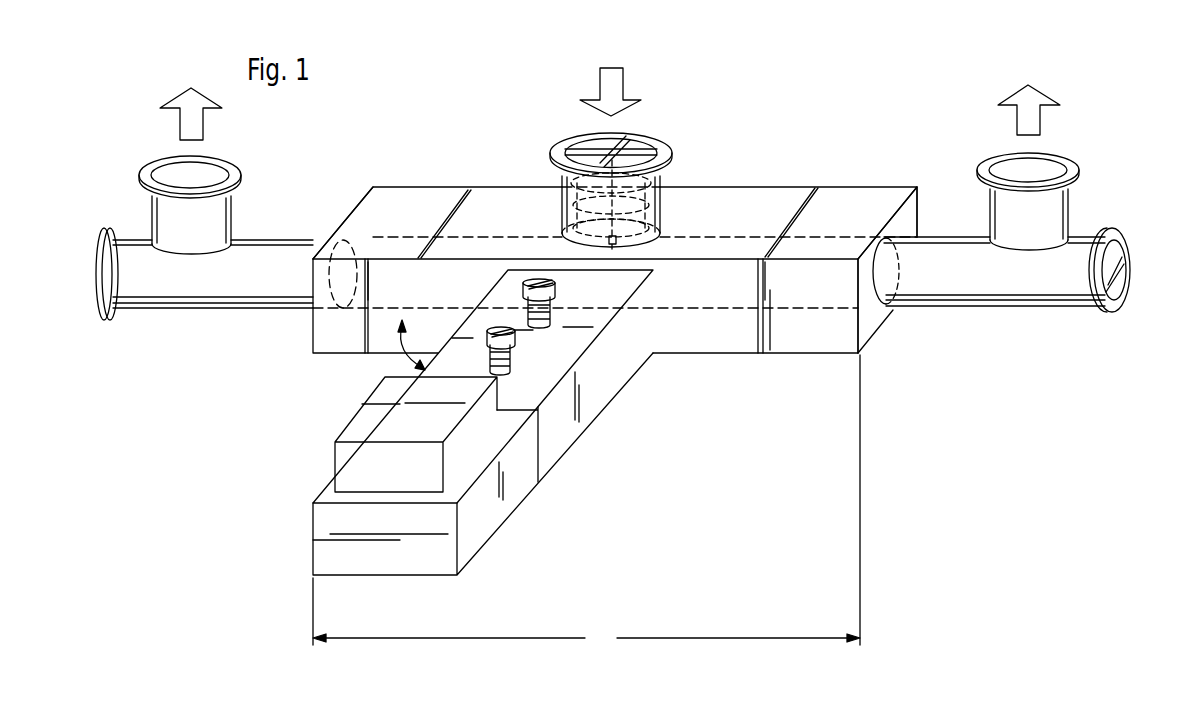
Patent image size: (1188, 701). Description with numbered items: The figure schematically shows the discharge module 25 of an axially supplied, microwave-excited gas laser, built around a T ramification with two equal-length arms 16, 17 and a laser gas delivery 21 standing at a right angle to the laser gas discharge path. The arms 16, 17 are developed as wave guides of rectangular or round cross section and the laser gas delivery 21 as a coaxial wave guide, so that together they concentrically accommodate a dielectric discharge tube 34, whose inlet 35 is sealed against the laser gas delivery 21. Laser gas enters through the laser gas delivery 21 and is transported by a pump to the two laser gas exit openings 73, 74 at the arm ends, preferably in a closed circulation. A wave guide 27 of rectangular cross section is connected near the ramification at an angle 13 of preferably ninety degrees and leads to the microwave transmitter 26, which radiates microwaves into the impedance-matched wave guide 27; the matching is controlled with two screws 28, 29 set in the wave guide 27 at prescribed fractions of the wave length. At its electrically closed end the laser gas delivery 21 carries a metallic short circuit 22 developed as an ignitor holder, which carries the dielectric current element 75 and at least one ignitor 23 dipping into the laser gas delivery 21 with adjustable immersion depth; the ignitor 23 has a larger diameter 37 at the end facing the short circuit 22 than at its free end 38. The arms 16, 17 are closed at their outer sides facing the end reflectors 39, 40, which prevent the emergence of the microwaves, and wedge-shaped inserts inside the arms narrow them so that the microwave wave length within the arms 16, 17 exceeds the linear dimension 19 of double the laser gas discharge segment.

The angle 13 is at (402, 352).
The arm 16 is at (408, 203).
The arm 17 is at (863, 197).
The linear dimension 19 is at (586, 502).
The laser gas delivery 21 is at (651, 134).
The metallic short circuit 22 is at (592, 150).
The ignitor 23 is at (580, 222).
The discharge module 25 is at (486, 186).
The microwave transmitter 26 is at (485, 425).
The wave guide 27 is at (615, 370).
The screw 28 is at (524, 300).
The screw 29 is at (513, 357).
The dielectric discharge tube 34 is at (763, 237).
The inlet of the discharge tube 35 is at (657, 208).
The large diameter 37 is at (667, 177).
The free end 38 is at (633, 250).
The end reflector 39 is at (108, 230).
The end reflector 40 is at (1108, 233).
The laser gas exit opening 73 is at (229, 208).
The laser gas exit opening 74 is at (1000, 212).
The dielectric current element 75 is at (657, 222).